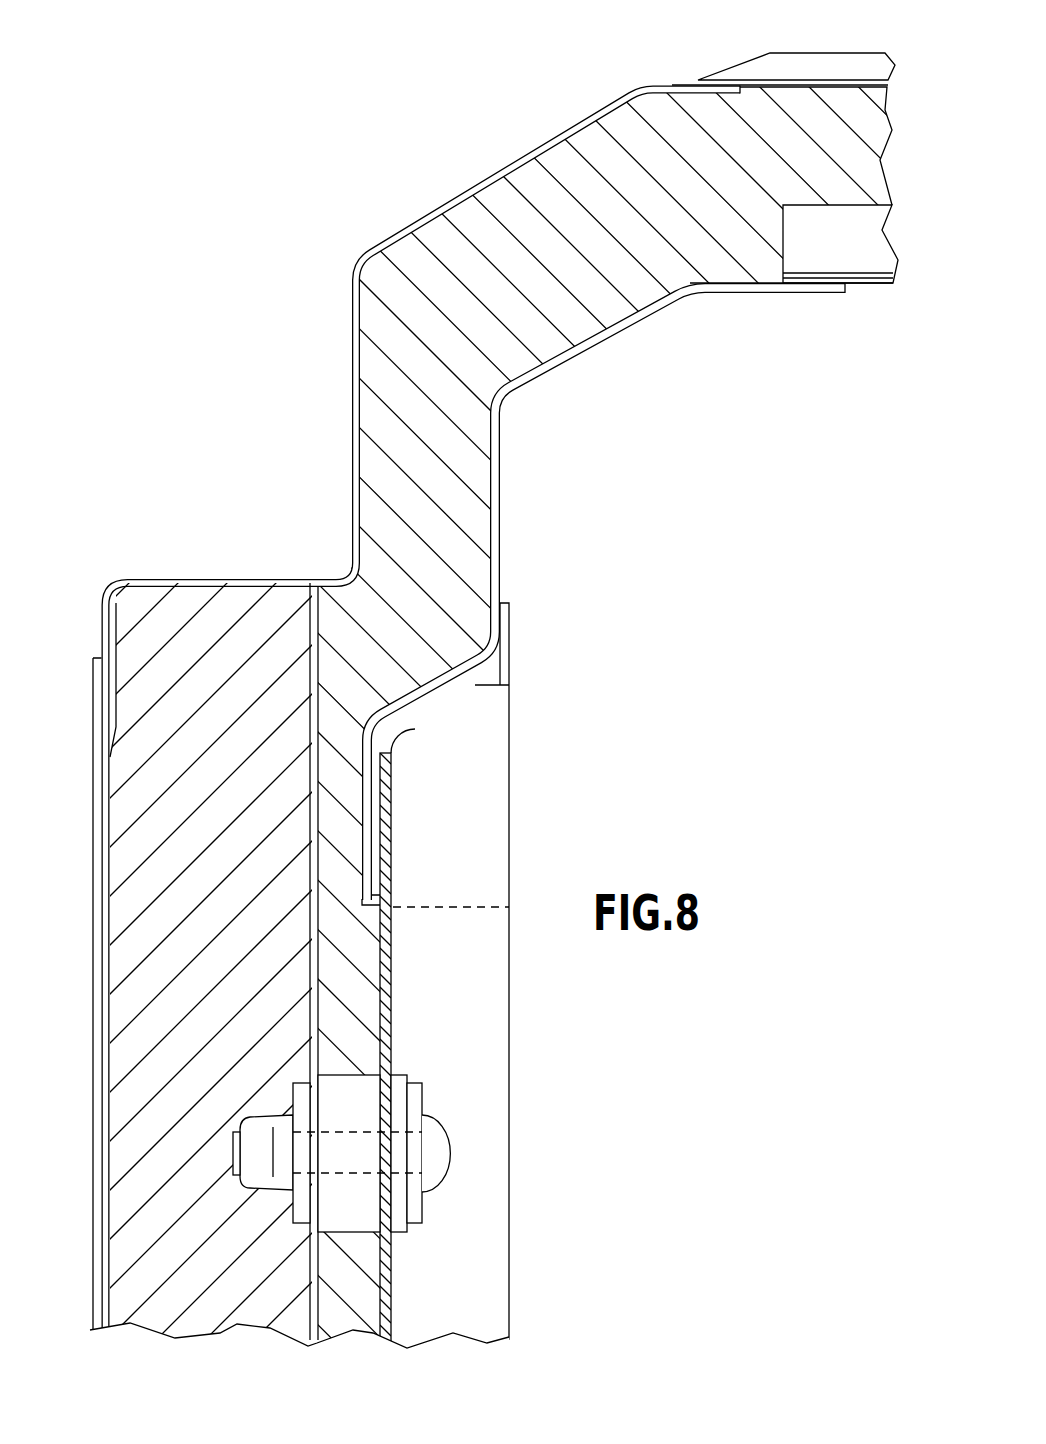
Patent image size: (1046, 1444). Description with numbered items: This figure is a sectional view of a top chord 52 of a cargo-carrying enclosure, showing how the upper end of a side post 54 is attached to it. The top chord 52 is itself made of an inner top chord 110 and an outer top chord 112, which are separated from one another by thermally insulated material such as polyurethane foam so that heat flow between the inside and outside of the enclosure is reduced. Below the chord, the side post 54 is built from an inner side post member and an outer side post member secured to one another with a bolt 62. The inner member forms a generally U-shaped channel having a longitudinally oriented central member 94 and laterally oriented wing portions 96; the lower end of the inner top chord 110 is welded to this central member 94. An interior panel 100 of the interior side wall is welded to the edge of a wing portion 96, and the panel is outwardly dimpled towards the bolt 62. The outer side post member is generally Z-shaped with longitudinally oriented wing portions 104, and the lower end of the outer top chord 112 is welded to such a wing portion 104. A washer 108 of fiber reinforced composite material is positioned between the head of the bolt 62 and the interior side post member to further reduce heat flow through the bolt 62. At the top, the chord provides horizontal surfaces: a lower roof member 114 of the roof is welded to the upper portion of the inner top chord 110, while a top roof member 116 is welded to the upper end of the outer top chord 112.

The top chord 52 is at (446, 180).
The side post 54 is at (437, 1067).
The bolt 62 is at (450, 1148).
The central member 94 is at (393, 867).
The wing portion 96 is at (480, 780).
The interior panel 100 is at (513, 660).
The wing portion 104 is at (293, 622).
The washer 108 is at (427, 1213).
The inner top chord 110 is at (587, 340).
The outer top chord 112 is at (630, 86).
The lower roof member 114 is at (871, 287).
The top roof member 116 is at (813, 52).